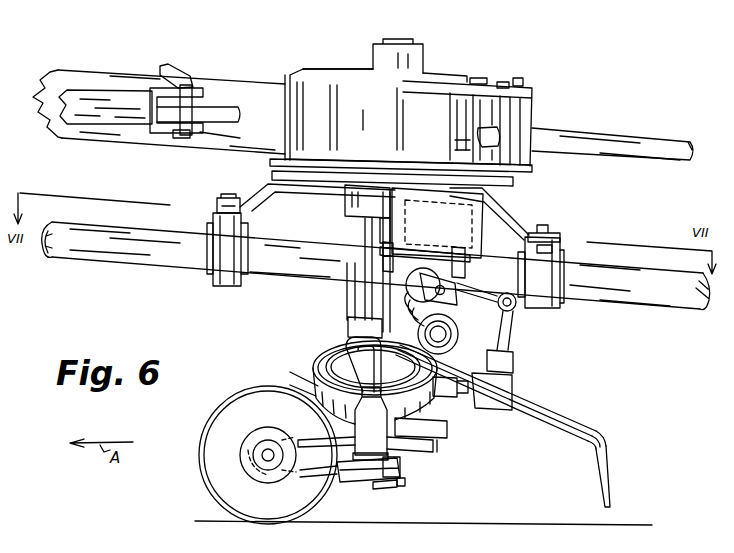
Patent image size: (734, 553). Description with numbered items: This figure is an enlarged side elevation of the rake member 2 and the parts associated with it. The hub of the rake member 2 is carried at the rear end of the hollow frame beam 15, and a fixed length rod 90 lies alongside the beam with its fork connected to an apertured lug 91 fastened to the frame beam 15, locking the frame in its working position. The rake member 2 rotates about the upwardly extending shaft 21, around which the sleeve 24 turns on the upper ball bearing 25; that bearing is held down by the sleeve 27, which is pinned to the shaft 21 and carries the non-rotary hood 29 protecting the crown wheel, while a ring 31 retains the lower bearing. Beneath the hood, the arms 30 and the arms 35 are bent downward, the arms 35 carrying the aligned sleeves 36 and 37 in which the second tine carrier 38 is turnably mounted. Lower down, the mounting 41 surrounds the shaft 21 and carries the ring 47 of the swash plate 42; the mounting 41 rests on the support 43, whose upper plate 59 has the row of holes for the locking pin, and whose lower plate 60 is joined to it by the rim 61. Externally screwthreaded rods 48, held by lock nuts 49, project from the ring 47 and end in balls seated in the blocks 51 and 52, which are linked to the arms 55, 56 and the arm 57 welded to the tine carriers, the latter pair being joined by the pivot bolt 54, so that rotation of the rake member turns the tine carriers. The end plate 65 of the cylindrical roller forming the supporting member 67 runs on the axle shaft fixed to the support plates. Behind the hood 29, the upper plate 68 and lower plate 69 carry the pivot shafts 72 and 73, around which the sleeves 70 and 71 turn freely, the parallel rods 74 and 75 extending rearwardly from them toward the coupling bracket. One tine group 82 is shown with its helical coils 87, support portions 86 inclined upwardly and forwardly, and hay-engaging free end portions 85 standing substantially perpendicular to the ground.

The rake member 2 is at (632, 258).
The hollow frame beam 15 is at (233, 80).
The upwardly extending shaft 21 is at (403, 43).
The sleeve 24 is at (353, 197).
The upper ball bearing 25 is at (258, 184).
The sleeve 27 is at (372, 50).
The hood 29 is at (312, 75).
The arm 30 is at (476, 224).
The ring 31 is at (367, 222).
The arm 35 is at (520, 210).
The sleeve 36 is at (552, 261).
The sleeve 37 is at (213, 283).
The second tine carrier 38 is at (100, 213).
The mounting 41 is at (428, 448).
The swash plate 42 is at (313, 340).
The support 43 is at (410, 489).
The ring 47 is at (345, 335).
The externally screwthreaded rod 48 is at (488, 410).
The lock nut 49 is at (476, 412).
The block 51 is at (398, 418).
The block 52 is at (500, 410).
The pivot bolt 54 is at (556, 262).
The arm 55 is at (347, 290).
The arm 56 is at (365, 300).
The arm 57 is at (481, 293).
The upper plate 59 is at (400, 470).
The lower plate 60 is at (357, 482).
The rim 61 is at (385, 490).
The end plate 65 is at (210, 415).
The supporting member 67 is at (202, 497).
The upper plate 68 is at (503, 82).
The lower plate 69 is at (528, 170).
The sleeve 70 is at (450, 122).
The sleeve 71 is at (529, 121).
The pivot shaft 72 is at (476, 78).
The pivot shaft 73 is at (520, 79).
The rod 74 is at (470, 136).
The rod 75 is at (613, 133).
The tine group 82 is at (605, 421).
The free end portion 85 is at (609, 480).
The support portion 86 is at (292, 374).
The helical coil 87 is at (462, 326).
The rod 90 is at (100, 90).
The apertured lug 91 is at (222, 120).